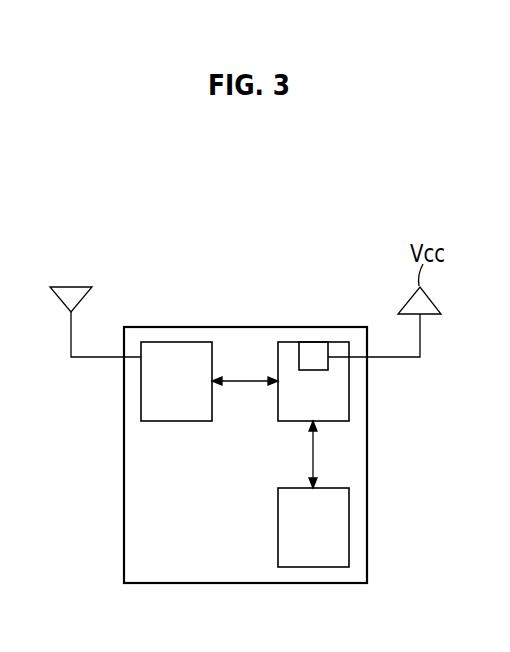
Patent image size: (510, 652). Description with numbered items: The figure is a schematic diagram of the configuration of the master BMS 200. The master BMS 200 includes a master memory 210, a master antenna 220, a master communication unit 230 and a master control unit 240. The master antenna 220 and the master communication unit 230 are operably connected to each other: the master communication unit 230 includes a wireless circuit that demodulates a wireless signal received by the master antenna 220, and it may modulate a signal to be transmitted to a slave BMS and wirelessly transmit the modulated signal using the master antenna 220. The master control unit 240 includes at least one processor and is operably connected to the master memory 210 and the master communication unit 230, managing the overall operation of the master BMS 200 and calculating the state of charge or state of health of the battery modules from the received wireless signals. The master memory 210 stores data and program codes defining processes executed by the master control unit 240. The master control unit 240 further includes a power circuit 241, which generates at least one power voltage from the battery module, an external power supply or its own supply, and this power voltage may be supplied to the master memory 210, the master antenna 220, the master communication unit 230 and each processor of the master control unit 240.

The master BMS 200 is at (261, 238).
The master memory 210 is at (278, 525).
The master antenna 220 is at (71, 287).
The master communication unit 230 is at (172, 342).
The master control unit 240 is at (335, 342).
The power circuit 241 is at (313, 348).